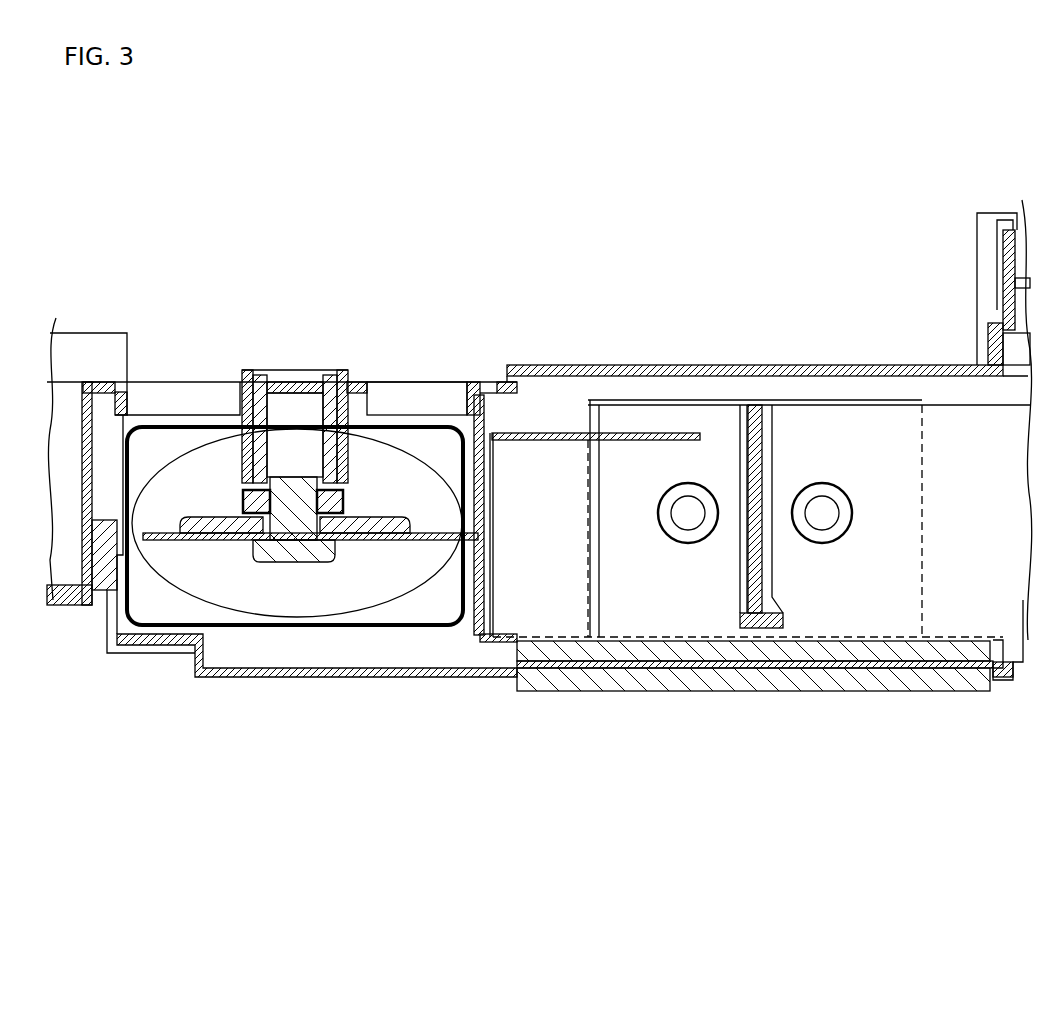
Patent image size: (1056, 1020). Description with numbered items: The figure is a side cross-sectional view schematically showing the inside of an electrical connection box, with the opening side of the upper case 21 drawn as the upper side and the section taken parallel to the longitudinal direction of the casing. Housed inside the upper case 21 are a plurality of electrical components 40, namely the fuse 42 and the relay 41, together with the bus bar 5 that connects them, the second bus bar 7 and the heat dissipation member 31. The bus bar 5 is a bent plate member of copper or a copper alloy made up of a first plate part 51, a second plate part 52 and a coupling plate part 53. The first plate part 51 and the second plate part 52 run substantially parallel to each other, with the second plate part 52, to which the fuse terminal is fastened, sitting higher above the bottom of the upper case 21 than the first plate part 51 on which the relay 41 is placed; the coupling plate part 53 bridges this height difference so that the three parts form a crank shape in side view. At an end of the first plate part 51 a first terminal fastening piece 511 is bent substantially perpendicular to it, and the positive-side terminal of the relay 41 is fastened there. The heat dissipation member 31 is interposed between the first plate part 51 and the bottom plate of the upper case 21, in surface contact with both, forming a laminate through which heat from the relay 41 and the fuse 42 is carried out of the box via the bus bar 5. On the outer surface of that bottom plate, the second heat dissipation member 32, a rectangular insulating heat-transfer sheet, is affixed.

The bus bar 5 is at (413, 600).
The second bus bar 7 is at (826, 430).
The upper case 21 is at (1008, 668).
The heat dissipation member 31 is at (683, 653).
The second heat dissipation member 32 is at (780, 680).
The electrical components 40 is at (555, 321).
The relay 41 is at (596, 400).
The fuse 42 is at (420, 428).
The first plate part 51 is at (503, 643).
The second plate part 52 is at (365, 540).
The coupling plate part 53 is at (477, 618).
The first terminal fastening piece 511 is at (596, 608).